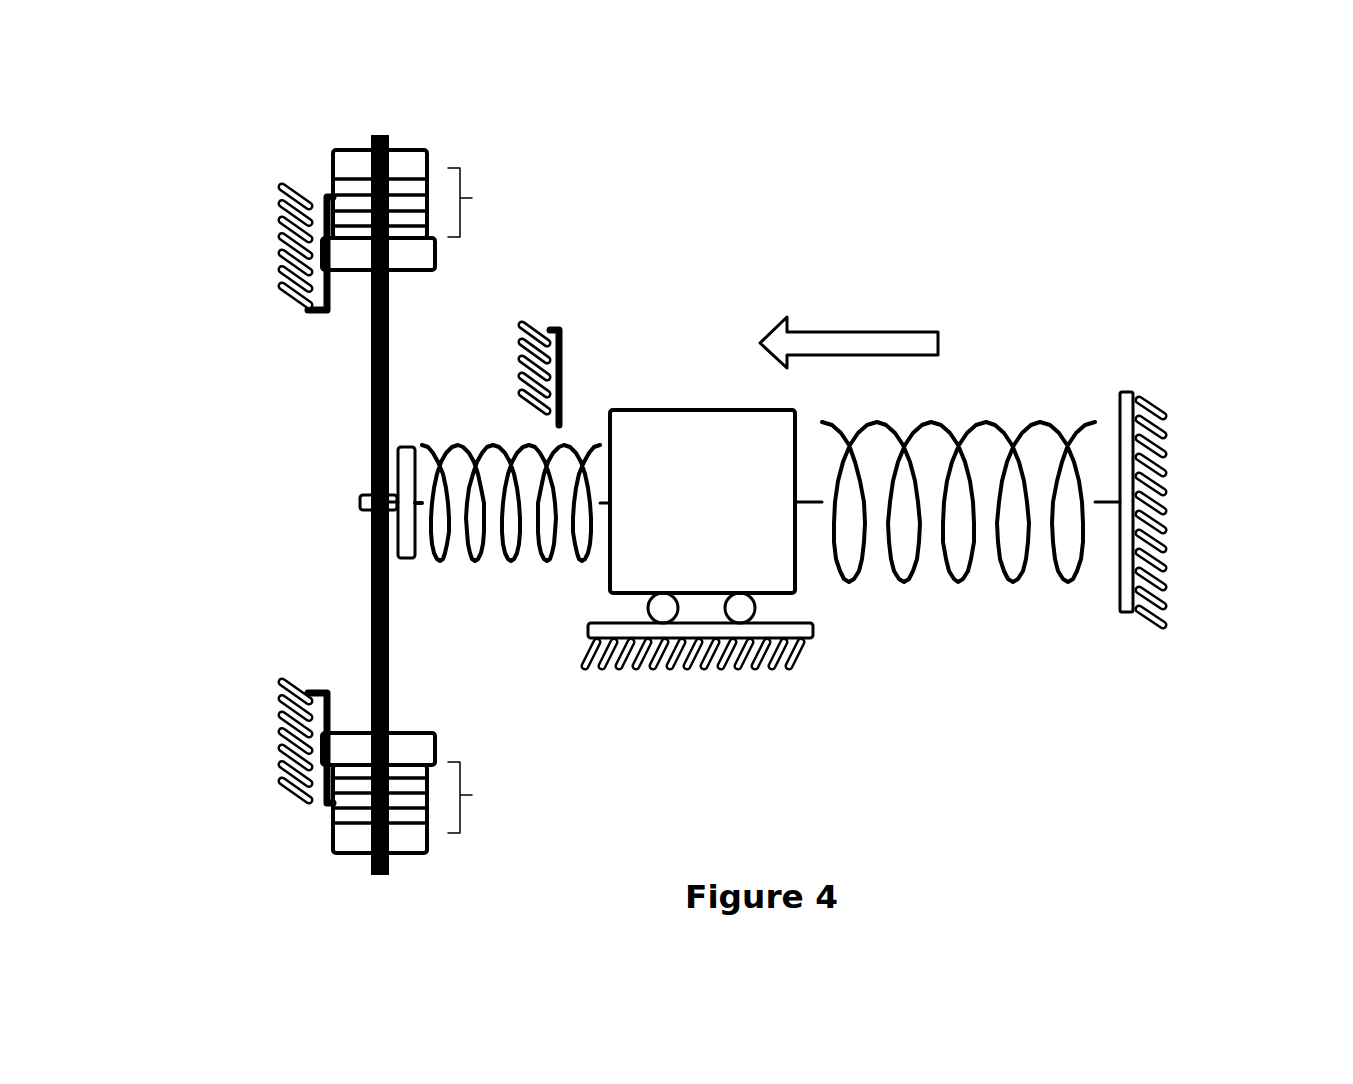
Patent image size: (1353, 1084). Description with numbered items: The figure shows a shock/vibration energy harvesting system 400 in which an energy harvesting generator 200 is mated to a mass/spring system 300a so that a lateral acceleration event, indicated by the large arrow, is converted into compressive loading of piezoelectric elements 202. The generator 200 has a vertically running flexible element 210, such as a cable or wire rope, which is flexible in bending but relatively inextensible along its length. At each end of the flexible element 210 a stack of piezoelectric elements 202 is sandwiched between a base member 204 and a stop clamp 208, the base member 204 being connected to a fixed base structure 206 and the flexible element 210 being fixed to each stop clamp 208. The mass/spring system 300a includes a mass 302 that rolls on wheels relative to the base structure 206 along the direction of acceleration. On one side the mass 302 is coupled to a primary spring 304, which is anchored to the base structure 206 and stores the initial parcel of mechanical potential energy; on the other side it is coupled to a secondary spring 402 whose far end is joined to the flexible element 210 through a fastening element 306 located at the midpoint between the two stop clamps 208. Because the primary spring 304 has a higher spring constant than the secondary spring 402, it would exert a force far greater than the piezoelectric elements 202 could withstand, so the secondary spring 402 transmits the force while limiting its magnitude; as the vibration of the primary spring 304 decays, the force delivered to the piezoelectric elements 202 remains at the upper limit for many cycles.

The energy harvesting generator 200 is at (261, 123).
The piezoelectric elements 202 is at (479, 188).
The base member 204 is at (447, 248).
The base structure 206 is at (263, 254).
The stop clamp 208 is at (433, 152).
The flexible element 210 is at (357, 419).
The mass/spring system 300a is at (991, 247).
The mass 302 is at (667, 398).
The primary spring 304 is at (1039, 411).
The fastening element 306 is at (346, 507).
The system 400 is at (846, 153).
The secondary spring 402 is at (500, 585).